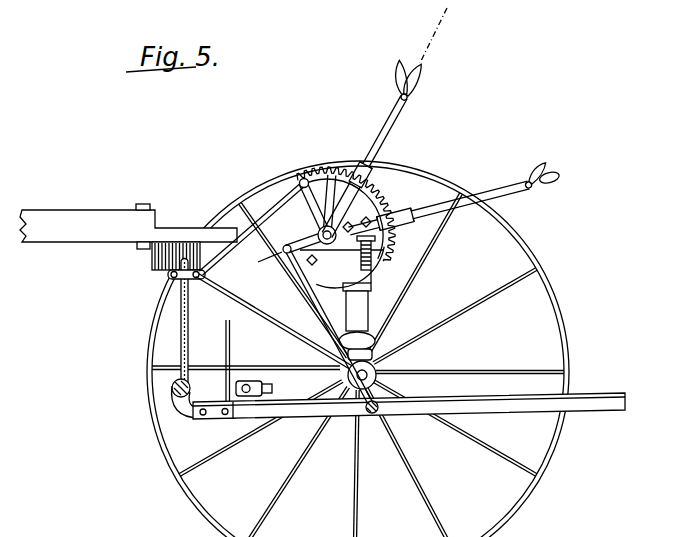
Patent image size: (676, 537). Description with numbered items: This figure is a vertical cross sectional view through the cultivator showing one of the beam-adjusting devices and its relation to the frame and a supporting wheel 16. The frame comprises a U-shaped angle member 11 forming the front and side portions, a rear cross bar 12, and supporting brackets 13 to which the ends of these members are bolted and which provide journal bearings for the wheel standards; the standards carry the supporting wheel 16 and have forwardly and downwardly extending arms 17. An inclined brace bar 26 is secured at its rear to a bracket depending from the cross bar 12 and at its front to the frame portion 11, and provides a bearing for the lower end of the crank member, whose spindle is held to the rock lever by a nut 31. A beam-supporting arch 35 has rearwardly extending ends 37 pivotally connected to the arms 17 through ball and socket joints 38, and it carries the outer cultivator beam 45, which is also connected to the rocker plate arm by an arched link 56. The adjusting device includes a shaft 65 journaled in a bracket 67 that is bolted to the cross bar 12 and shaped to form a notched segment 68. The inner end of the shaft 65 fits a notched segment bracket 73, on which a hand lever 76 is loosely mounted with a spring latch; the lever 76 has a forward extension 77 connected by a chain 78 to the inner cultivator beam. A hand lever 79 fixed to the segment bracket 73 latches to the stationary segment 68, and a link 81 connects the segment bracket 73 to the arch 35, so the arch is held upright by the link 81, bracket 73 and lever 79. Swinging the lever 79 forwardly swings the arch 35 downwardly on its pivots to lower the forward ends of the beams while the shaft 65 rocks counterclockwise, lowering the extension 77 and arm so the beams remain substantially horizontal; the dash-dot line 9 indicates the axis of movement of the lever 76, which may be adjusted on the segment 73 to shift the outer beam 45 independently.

The axis line / direction arrow 9 is at (431, 34).
The U-shaped angle member 11 is at (150, 257).
The rear cross bar 12 is at (380, 250).
The supporting bracket 13 is at (371, 276).
The supporting wheel 16 is at (176, 478).
The forwardly and downwardly extending arm 17 is at (318, 370).
The inclined brace bar 26 is at (278, 325).
The nut 31 is at (252, 228).
The beam-supporting arch 35 is at (181, 303).
The rearwardly extending end 37 is at (203, 390).
The ball and socket joint 38 is at (258, 379).
The outer cultivator beam 45 is at (461, 394).
The arched link 56 is at (226, 331).
The shaft 65 is at (312, 209).
The bracket 67 is at (314, 268).
The notched segment 68 is at (343, 166).
The segment bracket 73 is at (316, 180).
The hand lever 76 is at (375, 122).
The forward extension 77 is at (293, 265).
The chain 78 is at (318, 312).
The hand lever 79 is at (504, 190).
The link 81 is at (240, 199).